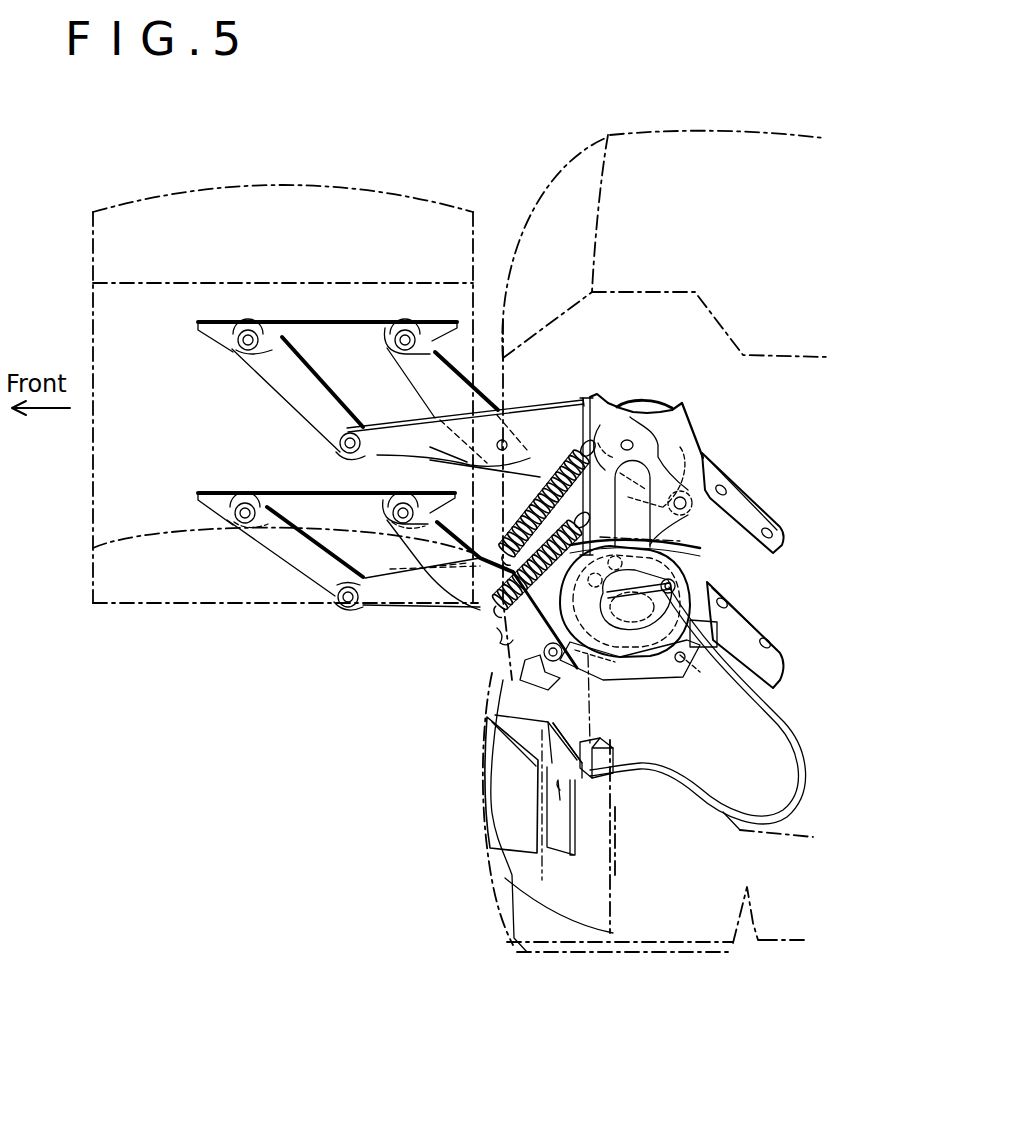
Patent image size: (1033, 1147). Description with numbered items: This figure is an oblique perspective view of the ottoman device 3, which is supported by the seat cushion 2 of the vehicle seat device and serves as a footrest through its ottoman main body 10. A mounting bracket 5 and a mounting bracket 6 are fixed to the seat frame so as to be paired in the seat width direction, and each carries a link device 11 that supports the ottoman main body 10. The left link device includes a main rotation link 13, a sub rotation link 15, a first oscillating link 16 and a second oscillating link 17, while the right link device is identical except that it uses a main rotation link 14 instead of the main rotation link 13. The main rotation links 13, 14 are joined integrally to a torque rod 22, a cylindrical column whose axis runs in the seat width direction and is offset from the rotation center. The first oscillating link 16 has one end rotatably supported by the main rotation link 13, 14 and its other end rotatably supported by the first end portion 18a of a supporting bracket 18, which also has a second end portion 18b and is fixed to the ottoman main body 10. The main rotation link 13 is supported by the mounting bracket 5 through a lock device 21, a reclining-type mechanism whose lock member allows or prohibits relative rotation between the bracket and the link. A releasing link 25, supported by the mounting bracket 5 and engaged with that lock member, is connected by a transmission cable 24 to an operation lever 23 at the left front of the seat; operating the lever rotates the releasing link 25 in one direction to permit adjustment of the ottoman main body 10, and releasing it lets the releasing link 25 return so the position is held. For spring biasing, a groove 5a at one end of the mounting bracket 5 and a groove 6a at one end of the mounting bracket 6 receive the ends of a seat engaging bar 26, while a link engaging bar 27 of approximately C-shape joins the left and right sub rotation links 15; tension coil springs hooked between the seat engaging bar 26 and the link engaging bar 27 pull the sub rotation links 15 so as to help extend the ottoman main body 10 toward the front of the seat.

The seat cushion 2 is at (543, 218).
The ottoman device 3 is at (437, 671).
The mounting bracket 5 is at (748, 630).
The groove 5a is at (660, 546).
The mounting bracket 6 is at (743, 505).
The groove 6a is at (591, 397).
The ottoman main body 10 is at (131, 606).
The link device 11 is at (298, 398).
The main rotation link 13 is at (380, 598).
The main rotation link 14 is at (548, 417).
The sub rotation link 15 is at (706, 448).
The first oscillating link 16 is at (270, 374).
The second oscillating link 17 is at (404, 376).
The supporting bracket 18 is at (321, 321).
The first end portion 18a is at (214, 320).
The second end portion 18b is at (432, 321).
The lock device 21 is at (580, 660).
The torque rod 22 is at (669, 416).
The operation lever 23 is at (497, 796).
The transmission cable 24 is at (806, 790).
The releasing link 25 is at (688, 590).
The seat engaging bar 26 is at (607, 396).
The link engaging bar 27 is at (503, 639).